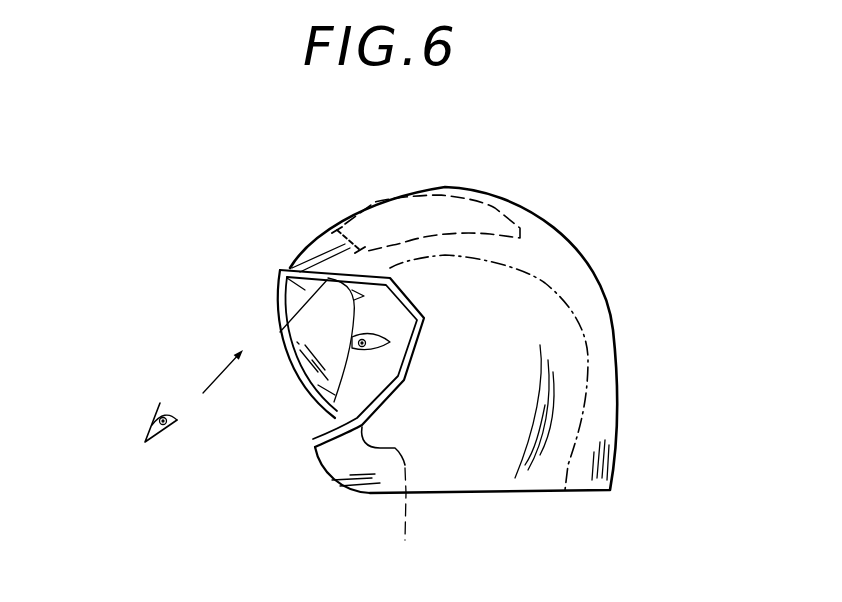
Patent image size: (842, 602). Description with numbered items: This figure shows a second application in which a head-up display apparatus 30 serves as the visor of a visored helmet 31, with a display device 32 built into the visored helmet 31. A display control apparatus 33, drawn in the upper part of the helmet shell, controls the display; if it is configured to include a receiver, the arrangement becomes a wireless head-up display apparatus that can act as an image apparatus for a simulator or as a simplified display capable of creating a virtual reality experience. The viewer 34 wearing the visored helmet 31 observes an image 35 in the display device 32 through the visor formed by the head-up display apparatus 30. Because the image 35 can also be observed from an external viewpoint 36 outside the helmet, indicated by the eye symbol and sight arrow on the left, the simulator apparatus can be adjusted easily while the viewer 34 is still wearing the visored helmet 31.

The head-up display apparatus 30 is at (262, 313).
The visored helmet 31 is at (596, 266).
The display device 32 is at (322, 240).
The display control apparatus 33 is at (413, 217).
The viewer 34 is at (580, 380).
The image 35 is at (289, 268).
The external viewpoint 36 is at (143, 430).